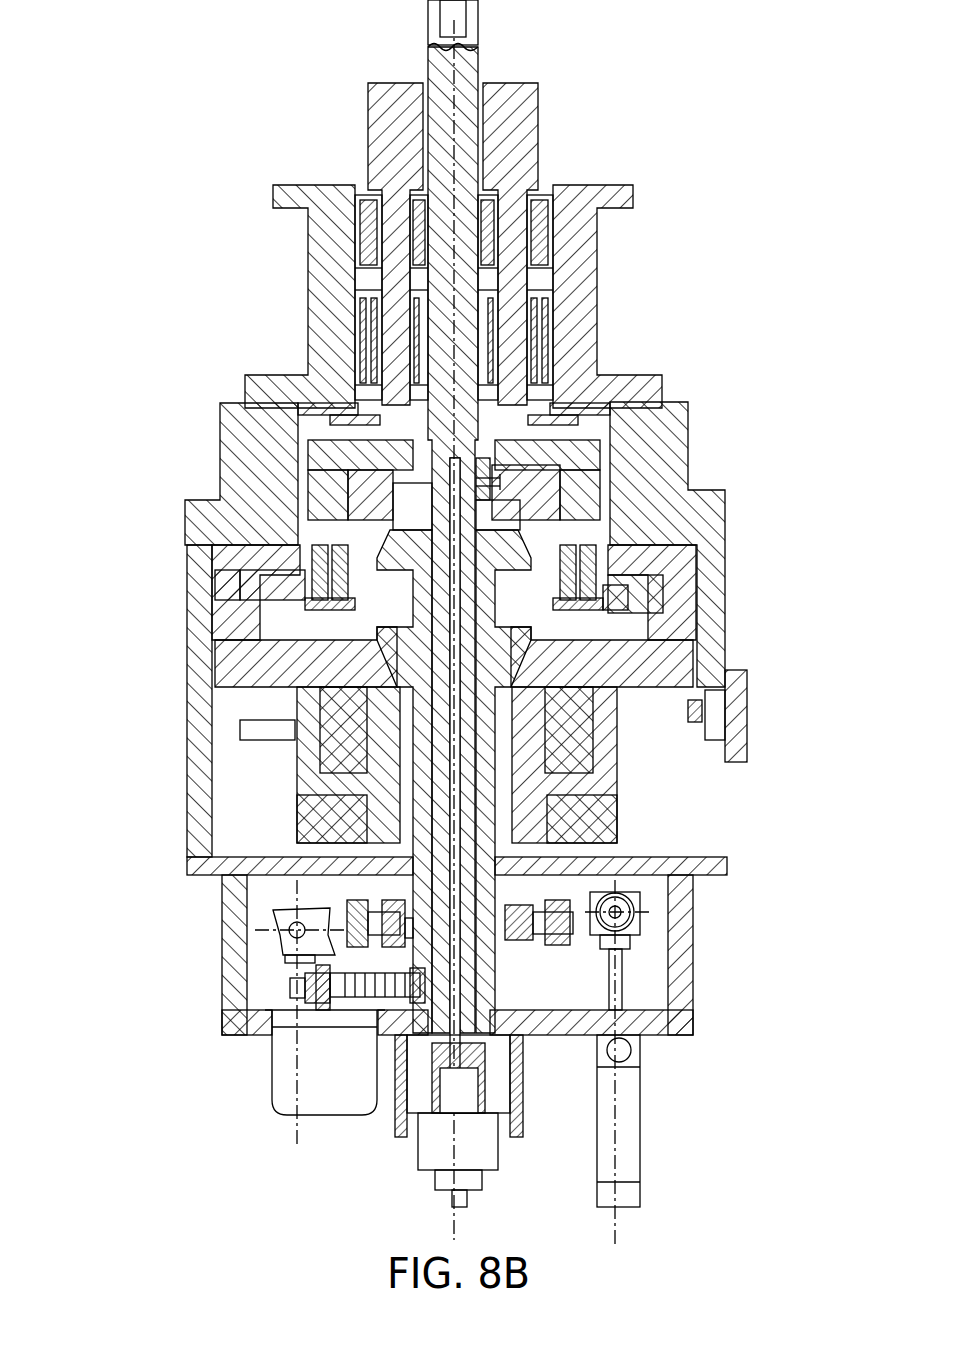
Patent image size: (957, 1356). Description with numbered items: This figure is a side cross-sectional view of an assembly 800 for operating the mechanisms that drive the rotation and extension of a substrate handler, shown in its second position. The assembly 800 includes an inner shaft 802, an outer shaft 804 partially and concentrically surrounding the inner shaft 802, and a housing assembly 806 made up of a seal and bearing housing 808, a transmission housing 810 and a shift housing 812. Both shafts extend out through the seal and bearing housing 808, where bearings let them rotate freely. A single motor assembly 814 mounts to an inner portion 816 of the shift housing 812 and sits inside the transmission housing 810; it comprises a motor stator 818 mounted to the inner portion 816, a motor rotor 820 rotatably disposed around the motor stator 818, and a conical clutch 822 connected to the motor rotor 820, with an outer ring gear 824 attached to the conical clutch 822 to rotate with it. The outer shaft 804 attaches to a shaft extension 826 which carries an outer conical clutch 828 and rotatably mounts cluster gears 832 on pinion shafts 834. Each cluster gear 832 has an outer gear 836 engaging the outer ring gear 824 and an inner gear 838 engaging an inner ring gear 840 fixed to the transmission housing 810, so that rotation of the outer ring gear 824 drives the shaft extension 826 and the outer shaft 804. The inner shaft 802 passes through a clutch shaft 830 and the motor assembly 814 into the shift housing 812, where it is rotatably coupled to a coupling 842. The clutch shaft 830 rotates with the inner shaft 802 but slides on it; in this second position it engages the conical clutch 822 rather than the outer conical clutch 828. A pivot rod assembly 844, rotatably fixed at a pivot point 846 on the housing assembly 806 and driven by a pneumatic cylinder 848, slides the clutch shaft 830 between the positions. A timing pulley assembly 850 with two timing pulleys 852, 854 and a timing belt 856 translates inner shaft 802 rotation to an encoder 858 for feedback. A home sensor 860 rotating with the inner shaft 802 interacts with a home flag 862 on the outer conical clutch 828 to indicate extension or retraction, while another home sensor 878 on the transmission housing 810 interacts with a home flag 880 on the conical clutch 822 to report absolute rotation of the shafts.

The assembly 800 is at (688, 135).
The inner shaft 802 is at (482, 66).
The outer shaft 804 is at (490, 96).
The housing assembly 806 is at (214, 411).
The seal and bearing housing 808 is at (310, 300).
The transmission housing 810 is at (298, 556).
The shift housing 812 is at (226, 912).
The motor assembly 814 is at (292, 770).
The inner portion 816 is at (340, 873).
The motor stator 818 is at (355, 792).
The motor rotor 820 is at (345, 800).
The conical clutch 822 is at (216, 692).
The outer ring gear 824 is at (310, 598).
The shaft extension 826 is at (296, 440).
The outer conical clutch 828 is at (312, 452).
The clutch shaft 830 is at (402, 626).
The cluster gears 832 is at (330, 548).
The pinion shafts 834 is at (352, 476).
The outer gear 836 is at (258, 600).
The inner gear 838 is at (312, 486).
The inner ring gear 840 is at (245, 578).
The coupling 842 is at (437, 1078).
The pivot rod assembly 844 is at (568, 948).
The pivot point 846 is at (280, 940).
The pneumatic cylinder 848 is at (625, 960).
The timing pulley assembly 850 is at (290, 987).
The timing pulley 852 is at (370, 992).
The timing pulley 854 is at (508, 962).
The timing belt 856 is at (430, 920).
The encoder 858 is at (312, 1118).
The home sensor 860 is at (500, 435).
The home flag 862 is at (540, 500).
The home sensor 878 is at (748, 712).
The home flag 880 is at (292, 725).